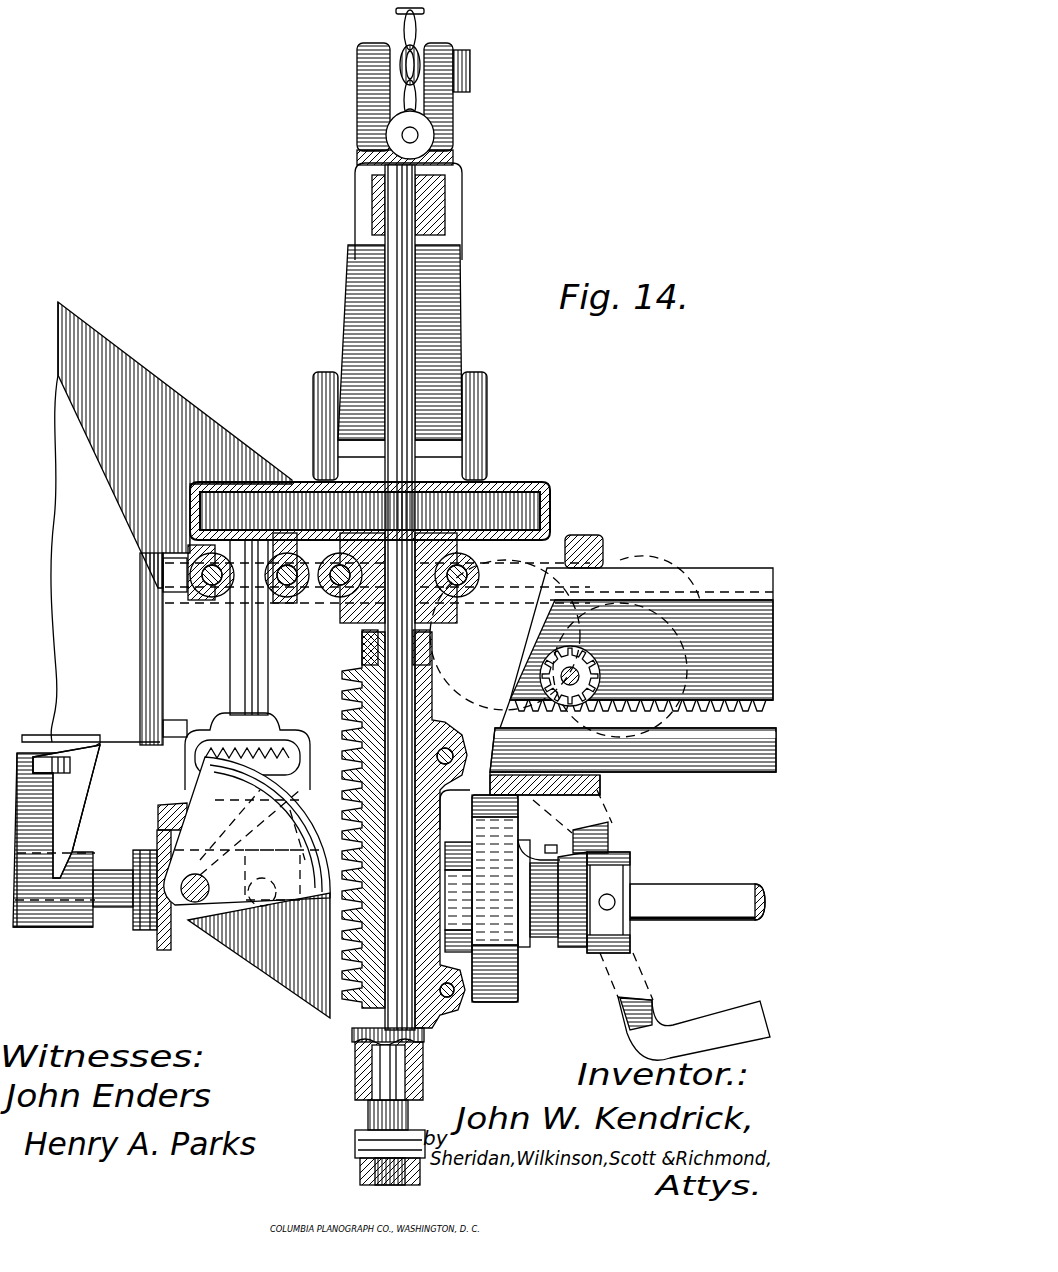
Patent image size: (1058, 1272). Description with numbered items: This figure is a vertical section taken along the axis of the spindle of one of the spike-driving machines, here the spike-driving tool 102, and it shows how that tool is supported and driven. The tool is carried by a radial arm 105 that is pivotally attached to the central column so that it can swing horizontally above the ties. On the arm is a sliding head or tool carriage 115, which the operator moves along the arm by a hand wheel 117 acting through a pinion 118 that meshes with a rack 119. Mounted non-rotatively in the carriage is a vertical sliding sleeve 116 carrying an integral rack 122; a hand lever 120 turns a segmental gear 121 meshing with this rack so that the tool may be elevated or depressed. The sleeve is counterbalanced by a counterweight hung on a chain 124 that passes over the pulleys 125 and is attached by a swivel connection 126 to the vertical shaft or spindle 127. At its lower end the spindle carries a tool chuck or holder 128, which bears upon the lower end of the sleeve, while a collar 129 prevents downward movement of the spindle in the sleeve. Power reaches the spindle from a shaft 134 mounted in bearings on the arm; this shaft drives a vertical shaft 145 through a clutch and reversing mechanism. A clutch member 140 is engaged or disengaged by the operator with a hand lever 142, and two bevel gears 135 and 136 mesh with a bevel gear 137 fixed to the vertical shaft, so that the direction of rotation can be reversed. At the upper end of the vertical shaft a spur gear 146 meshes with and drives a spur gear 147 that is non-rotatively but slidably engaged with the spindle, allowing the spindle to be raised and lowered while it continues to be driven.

The spike-driving tool 102 is at (380, 1162).
The radial arm 105 is at (709, 589).
The sliding head or tool carriage 115 is at (589, 569).
The vertical sliding sleeve 116 is at (351, 1031).
The hand wheel 117 is at (629, 599).
The pinion 118 is at (592, 692).
The rack 119 is at (744, 726).
The hand lever 120 is at (552, 544).
The segmental gear 121 is at (251, 962).
The rack 122 is at (297, 992).
The chain 124 is at (432, 14).
The pulley 125 is at (426, 80).
The swivel connection 126 is at (442, 220).
The vertical shaft or spindle 127 is at (420, 350).
The tool chuck or holder 128 is at (427, 1039).
The collar 129 is at (366, 659).
The shaft 134 is at (121, 909).
The bevel gear 135 is at (179, 983).
The bevel gear 136 is at (289, 989).
The bevel gear 137 is at (194, 801).
The clutch member 140 is at (511, 1006).
The hand lever 142 is at (722, 1029).
The vertical shaft 145 is at (246, 664).
The spur gear 146 is at (224, 497).
The spur gear 147 is at (511, 497).